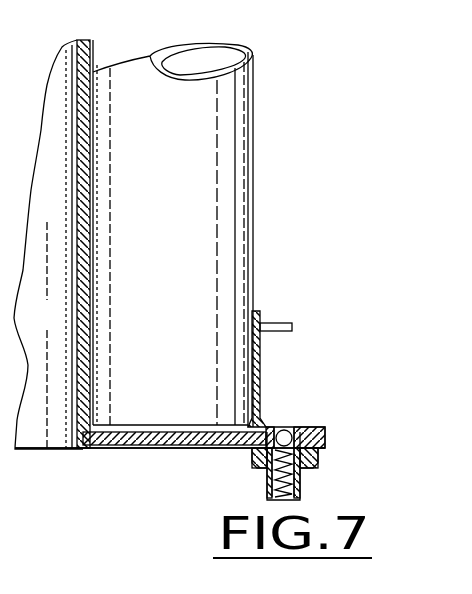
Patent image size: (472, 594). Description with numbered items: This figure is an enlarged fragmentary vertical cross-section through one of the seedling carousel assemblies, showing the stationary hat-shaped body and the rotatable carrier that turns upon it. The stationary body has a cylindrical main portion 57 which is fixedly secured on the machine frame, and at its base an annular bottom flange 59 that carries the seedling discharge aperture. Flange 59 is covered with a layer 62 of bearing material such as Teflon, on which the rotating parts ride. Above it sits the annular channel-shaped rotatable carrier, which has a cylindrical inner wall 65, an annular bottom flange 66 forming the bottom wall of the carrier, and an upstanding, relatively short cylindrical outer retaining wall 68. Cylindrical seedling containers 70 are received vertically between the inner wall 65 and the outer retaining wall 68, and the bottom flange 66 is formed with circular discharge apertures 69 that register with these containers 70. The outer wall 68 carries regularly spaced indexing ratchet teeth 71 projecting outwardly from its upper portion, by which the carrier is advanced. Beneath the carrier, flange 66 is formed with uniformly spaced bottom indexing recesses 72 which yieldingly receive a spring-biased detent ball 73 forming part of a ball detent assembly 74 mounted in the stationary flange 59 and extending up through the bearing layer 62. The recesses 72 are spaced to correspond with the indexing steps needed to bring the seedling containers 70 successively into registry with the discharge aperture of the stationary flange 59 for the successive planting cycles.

The cylindrical main portion 57 is at (80, 137).
The annular bottom flange 59 is at (113, 450).
The layer of bearing material 62 is at (173, 438).
The cylindrical inner wall 65 is at (93, 60).
The annular bottom flange 66 is at (274, 427).
The outer retaining wall 68 is at (258, 312).
The discharge apertures 69 is at (123, 430).
The seedling containers 70 is at (253, 128).
The indexing ratchet teeth 71 is at (288, 323).
The bottom indexing recesses 72 is at (285, 430).
The detent ball 73 is at (300, 427).
The ball detent assembly 74 is at (267, 478).